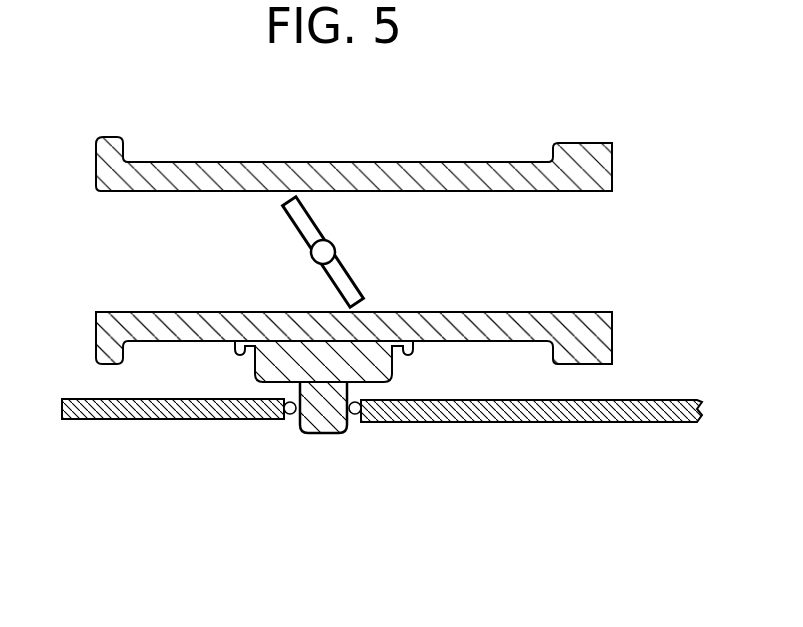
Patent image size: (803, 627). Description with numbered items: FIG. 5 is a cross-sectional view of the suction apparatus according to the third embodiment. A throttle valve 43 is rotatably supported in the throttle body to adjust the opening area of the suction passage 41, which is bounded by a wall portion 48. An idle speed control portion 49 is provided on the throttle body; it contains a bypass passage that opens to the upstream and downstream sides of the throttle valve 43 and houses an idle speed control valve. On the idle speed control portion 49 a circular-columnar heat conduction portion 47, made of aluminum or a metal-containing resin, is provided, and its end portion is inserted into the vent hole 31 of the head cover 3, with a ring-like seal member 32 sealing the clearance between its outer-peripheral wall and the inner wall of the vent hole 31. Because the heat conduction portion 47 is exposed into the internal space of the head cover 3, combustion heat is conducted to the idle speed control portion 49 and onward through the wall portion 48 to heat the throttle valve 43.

The head cover 3 is at (437, 421).
The vent hole 31 is at (291, 415).
The seal member 32 is at (355, 415).
The suction passage 41 is at (175, 220).
The throttle valve 43 is at (308, 225).
The heat conduction portion 47 is at (326, 410).
The wall portion 48 is at (467, 177).
The idle speed control portion 49 is at (268, 357).